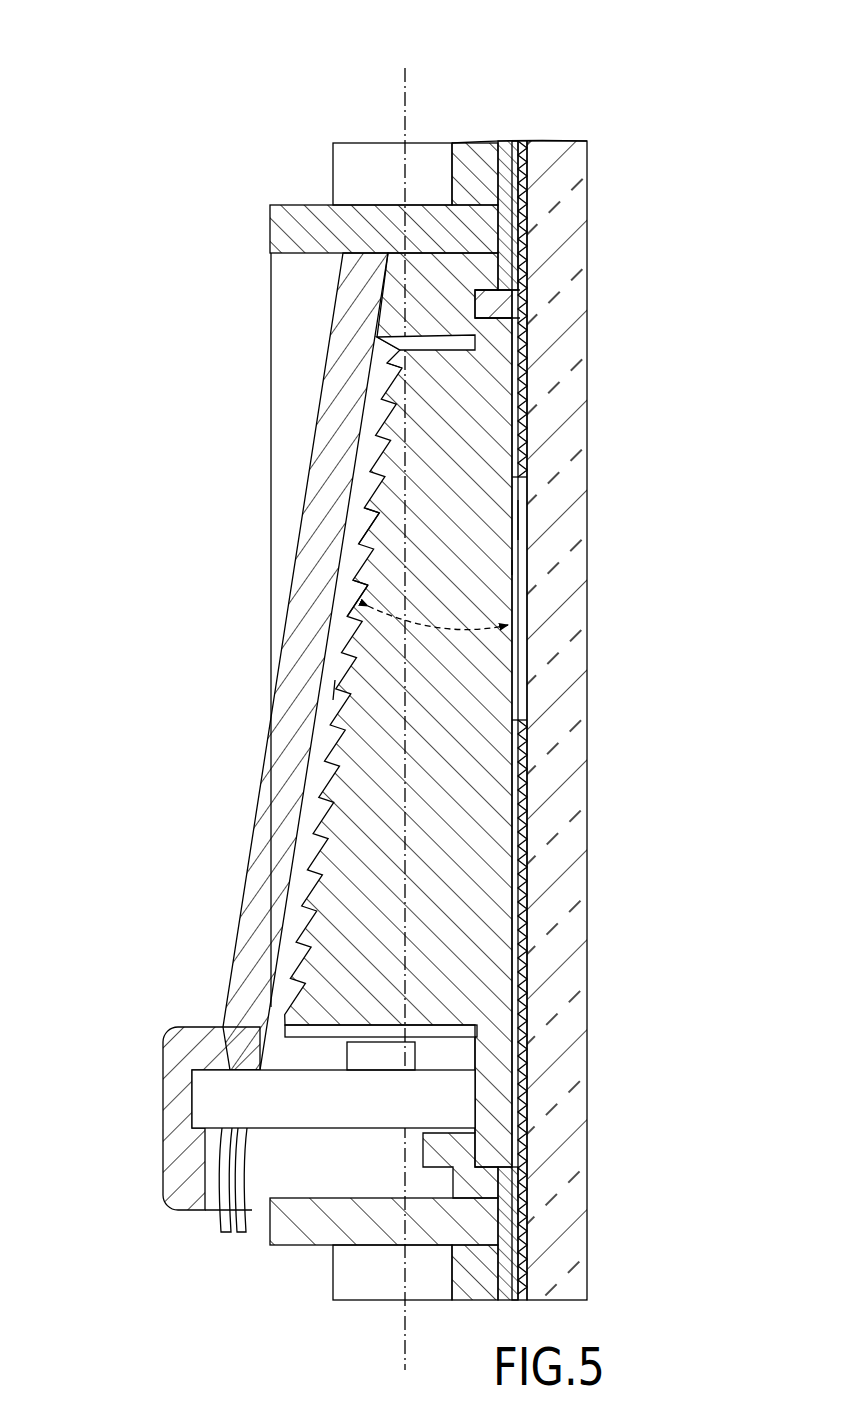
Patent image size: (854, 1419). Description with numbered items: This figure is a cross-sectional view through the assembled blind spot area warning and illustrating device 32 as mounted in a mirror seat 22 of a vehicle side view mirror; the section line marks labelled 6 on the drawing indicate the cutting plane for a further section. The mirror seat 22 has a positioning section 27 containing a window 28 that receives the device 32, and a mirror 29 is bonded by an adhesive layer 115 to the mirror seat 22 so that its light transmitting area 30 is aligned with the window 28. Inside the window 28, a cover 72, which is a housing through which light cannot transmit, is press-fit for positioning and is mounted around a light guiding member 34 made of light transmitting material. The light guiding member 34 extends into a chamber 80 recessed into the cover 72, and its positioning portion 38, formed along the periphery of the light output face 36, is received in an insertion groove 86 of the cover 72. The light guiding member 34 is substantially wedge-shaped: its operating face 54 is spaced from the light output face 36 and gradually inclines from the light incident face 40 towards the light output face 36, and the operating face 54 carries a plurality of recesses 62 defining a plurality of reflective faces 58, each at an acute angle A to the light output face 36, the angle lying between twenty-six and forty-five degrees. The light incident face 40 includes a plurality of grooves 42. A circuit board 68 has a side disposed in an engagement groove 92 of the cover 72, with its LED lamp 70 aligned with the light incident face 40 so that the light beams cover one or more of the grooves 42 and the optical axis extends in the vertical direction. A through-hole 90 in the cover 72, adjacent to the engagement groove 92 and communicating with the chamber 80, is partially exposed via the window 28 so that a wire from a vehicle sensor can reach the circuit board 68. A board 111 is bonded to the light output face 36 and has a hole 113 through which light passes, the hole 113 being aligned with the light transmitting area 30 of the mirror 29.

The blind spot area warning and illustrating device 32 is at (200, 160).
The mirror seat 22 is at (478, 143).
The section line 6- 6 is at (405, 68).
The adhesive layer 115 is at (512, 183).
The positioning section 27 is at (290, 232).
The window 28 is at (290, 300).
The insertion groove 86 is at (485, 318).
The mirror 29 is at (556, 415).
The cover 72 is at (323, 387).
The light guiding member 34 is at (518, 518).
The light transmitting area 30 is at (601, 720).
The reflective faces 58 is at (365, 528).
The recesses 62 is at (365, 555).
The light output face 36 is at (512, 568).
The hole 113 is at (522, 605).
The acute angle A is at (512, 690).
The chamber 80 is at (335, 690).
The operating face 54 is at (281, 710).
The board 111 is at (522, 790).
The grooves 42 is at (350, 1025).
The light emitting diode (LED) lamp 70 is at (355, 1052).
The engagement groove 92 is at (195, 1100).
The circuit board 68 is at (235, 1105).
The through-hole 90 is at (215, 1190).
The light incident face 40 is at (460, 1045).
The positioning portion 38 is at (500, 1105).